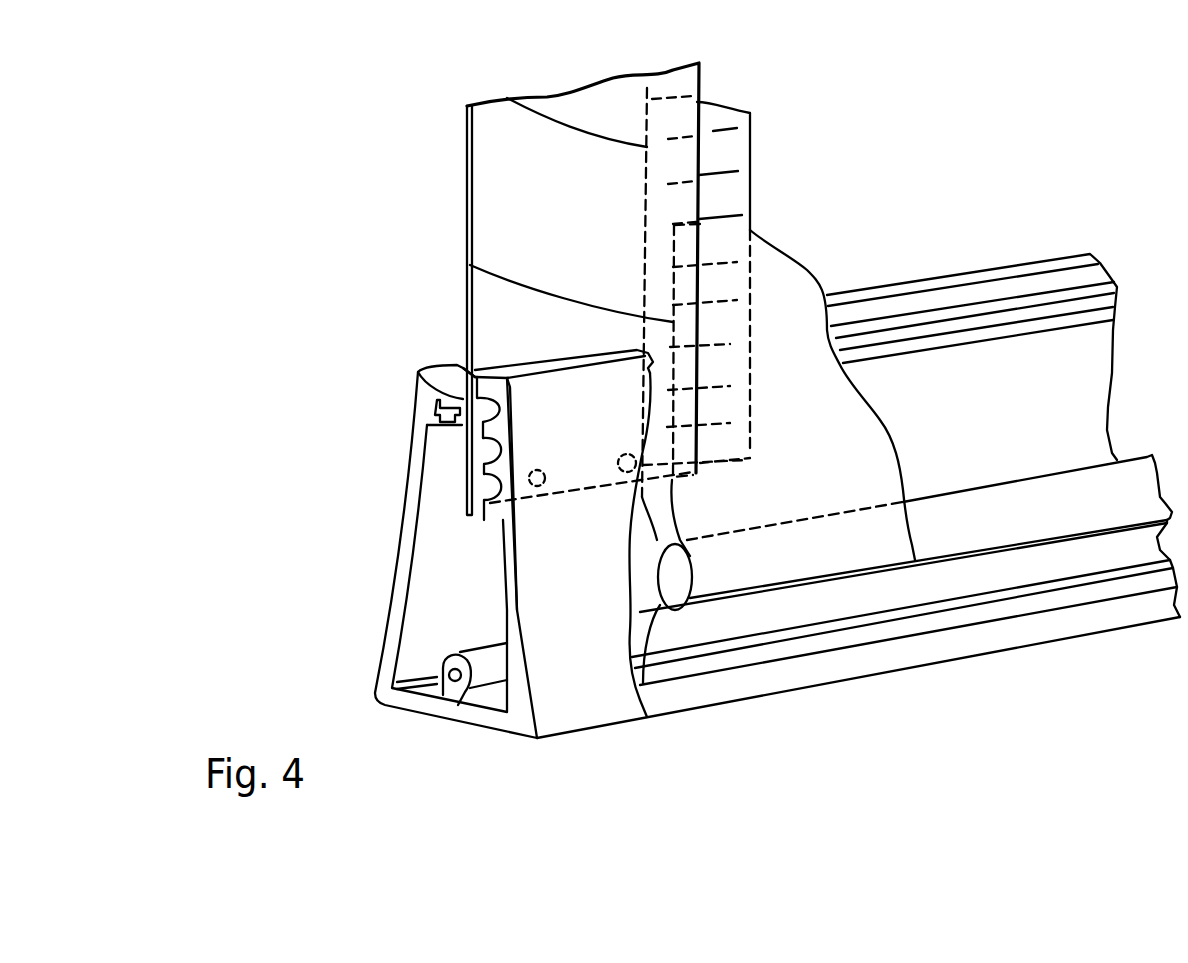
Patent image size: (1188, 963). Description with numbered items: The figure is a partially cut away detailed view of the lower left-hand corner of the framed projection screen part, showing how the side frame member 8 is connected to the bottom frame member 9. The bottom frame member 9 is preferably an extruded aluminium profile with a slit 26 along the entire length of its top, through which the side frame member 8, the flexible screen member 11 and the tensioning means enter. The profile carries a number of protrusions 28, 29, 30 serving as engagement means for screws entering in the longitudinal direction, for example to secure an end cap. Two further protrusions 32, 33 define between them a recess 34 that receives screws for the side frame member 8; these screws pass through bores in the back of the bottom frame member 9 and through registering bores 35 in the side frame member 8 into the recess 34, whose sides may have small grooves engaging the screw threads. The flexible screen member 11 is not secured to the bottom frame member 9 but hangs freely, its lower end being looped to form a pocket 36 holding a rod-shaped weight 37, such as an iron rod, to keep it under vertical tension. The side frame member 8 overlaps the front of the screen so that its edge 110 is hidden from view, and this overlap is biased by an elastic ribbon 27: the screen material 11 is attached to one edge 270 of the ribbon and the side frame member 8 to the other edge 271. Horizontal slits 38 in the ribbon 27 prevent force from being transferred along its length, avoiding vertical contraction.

The side frame member 8 is at (470, 125).
The edge of the elastic ribbon 271 is at (507, 98).
The edge of the flexible screen material 110 is at (470, 265).
The elastic ribbon 27 is at (715, 155).
The horizontal slits 38 is at (713, 130).
The edge of the elastic ribbon 270 is at (750, 327).
The flexible screen member 11 is at (790, 260).
The bottom frame member 9 is at (987, 267).
The pocket 36 is at (678, 578).
The rod-shaped weight 37 is at (642, 683).
The protrusion 28 is at (418, 372).
The slit 26 is at (456, 352).
The protrusion 29 is at (488, 420).
The protrusion 32 is at (487, 458).
The recess 34 is at (470, 475).
The protrusion 33 is at (527, 483).
The bores 35 is at (533, 487).
The protrusion 30 is at (442, 657).